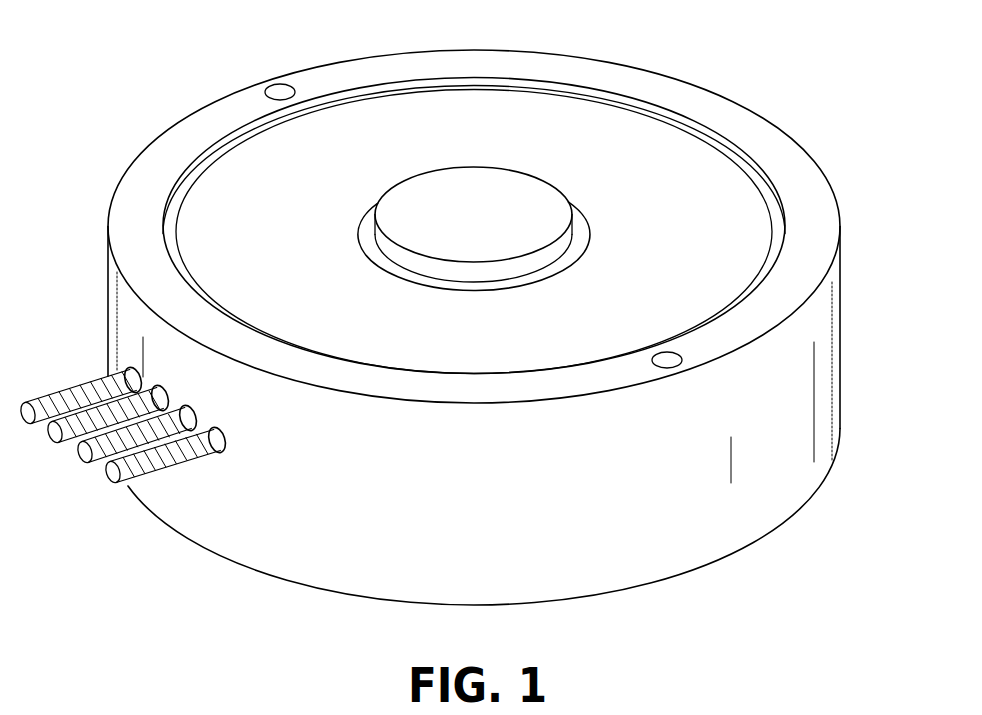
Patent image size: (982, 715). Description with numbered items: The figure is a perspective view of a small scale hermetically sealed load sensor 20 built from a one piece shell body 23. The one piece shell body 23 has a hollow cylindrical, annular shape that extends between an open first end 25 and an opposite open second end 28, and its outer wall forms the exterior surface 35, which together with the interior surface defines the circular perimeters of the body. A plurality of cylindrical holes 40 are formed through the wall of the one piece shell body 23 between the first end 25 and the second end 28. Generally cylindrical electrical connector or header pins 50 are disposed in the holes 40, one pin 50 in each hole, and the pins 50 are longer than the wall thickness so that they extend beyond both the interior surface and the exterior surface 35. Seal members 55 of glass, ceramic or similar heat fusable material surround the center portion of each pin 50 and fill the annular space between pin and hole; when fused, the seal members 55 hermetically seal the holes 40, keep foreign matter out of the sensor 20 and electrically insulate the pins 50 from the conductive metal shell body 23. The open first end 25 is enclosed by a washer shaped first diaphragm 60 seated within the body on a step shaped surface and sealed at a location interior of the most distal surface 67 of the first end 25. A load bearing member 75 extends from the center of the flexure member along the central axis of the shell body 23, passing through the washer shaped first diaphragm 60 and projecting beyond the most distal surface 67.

The small scale hermetically sealed load sensor 20 is at (107, 111).
The one piece shell body 23 is at (710, 527).
The open first end 25 is at (838, 302).
The open second end 28 is at (798, 483).
The exterior surface 35 is at (499, 512).
The cylindrical holes 40 is at (227, 452).
The header pins 50 is at (110, 473).
The seal members 55 is at (222, 453).
The first diaphragm 60 is at (695, 167).
The most distal surface 67 is at (800, 197).
The load bearing member 75 is at (483, 207).